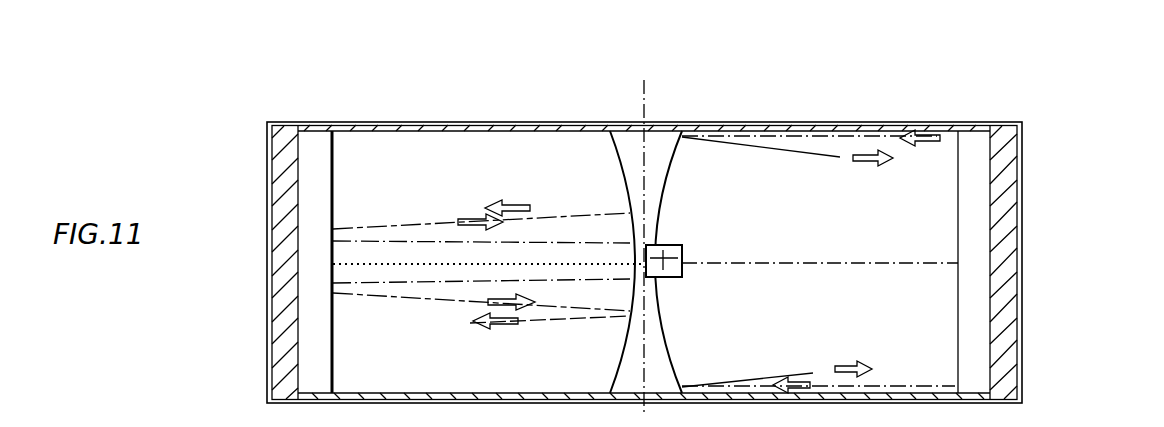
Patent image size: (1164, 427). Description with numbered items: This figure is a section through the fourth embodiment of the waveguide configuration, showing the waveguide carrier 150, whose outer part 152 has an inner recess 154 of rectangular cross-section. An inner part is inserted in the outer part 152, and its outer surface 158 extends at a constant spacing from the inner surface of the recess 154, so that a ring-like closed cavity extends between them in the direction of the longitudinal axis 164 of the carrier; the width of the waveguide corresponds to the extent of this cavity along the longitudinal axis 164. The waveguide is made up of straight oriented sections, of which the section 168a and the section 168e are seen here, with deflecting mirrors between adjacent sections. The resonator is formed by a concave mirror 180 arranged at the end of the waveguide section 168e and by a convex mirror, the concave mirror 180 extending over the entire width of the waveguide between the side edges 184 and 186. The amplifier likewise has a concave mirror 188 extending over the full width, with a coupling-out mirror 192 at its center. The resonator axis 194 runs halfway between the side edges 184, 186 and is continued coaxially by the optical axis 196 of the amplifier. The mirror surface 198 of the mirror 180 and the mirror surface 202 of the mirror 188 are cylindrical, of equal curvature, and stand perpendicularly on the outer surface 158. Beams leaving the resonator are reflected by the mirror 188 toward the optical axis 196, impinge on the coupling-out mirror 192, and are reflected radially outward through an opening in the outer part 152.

The waveguide carrier 150 is at (1048, 135).
The outer part 152 is at (1005, 195).
The inner recess 154 is at (977, 266).
The outer surface 158 is at (925, 322).
The longitudinal axis 164 is at (646, 97).
The straight oriented waveguide section 168a is at (815, 155).
The straight oriented waveguide section 168e is at (430, 297).
The mirror 180 is at (622, 165).
The side edge 184 is at (757, 134).
The side edge 186 is at (735, 392).
The mirror 188 is at (666, 180).
The coupling-out mirror 192 is at (683, 276).
The resonator axis 194 is at (418, 262).
The optical axis of the amplifier 196 is at (806, 265).
The mirror surface 198 is at (623, 352).
The mirror surface 202 is at (665, 332).